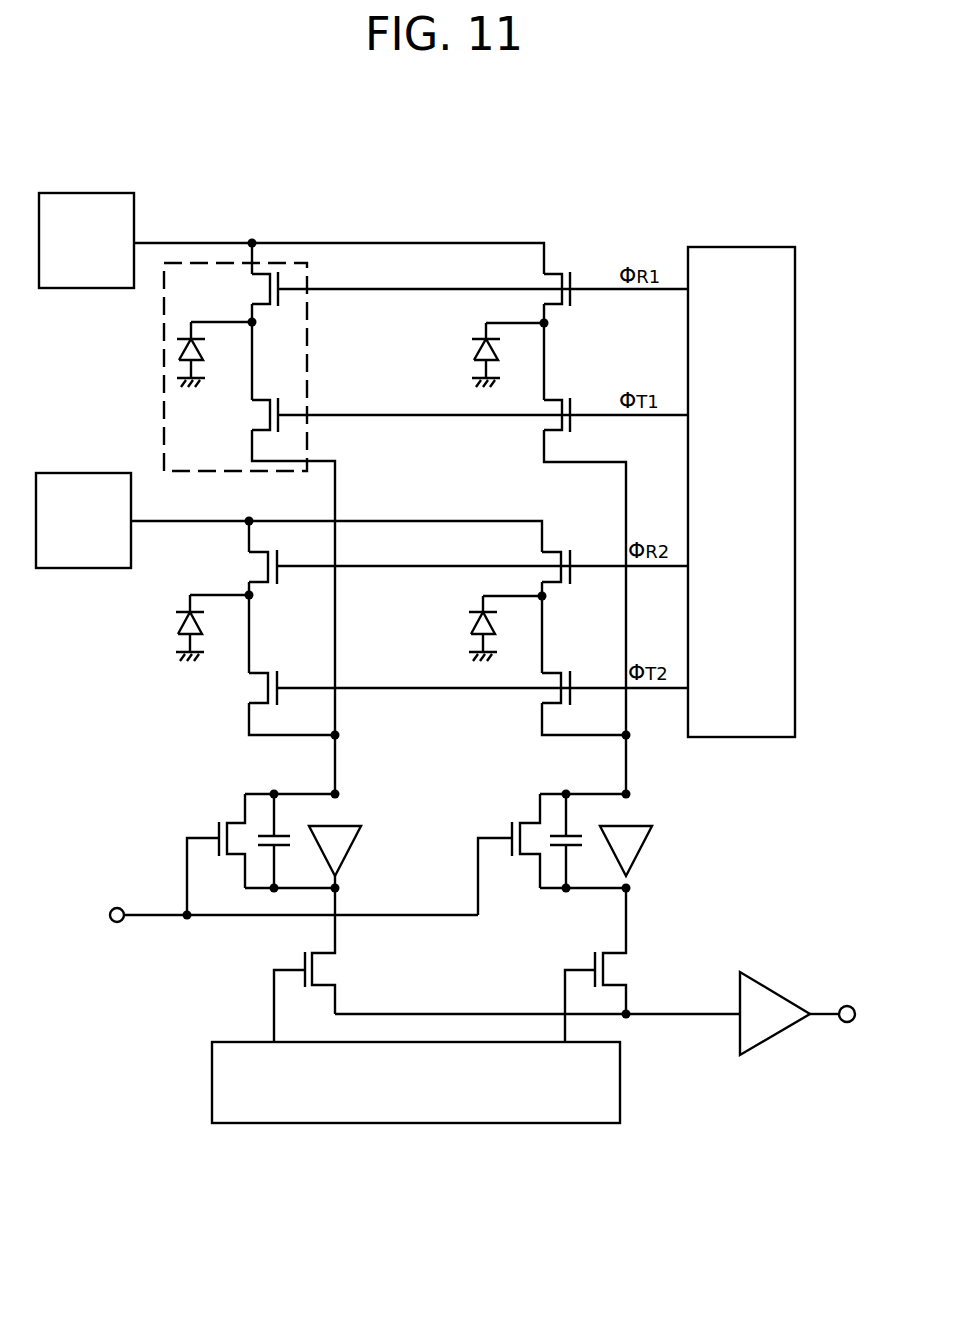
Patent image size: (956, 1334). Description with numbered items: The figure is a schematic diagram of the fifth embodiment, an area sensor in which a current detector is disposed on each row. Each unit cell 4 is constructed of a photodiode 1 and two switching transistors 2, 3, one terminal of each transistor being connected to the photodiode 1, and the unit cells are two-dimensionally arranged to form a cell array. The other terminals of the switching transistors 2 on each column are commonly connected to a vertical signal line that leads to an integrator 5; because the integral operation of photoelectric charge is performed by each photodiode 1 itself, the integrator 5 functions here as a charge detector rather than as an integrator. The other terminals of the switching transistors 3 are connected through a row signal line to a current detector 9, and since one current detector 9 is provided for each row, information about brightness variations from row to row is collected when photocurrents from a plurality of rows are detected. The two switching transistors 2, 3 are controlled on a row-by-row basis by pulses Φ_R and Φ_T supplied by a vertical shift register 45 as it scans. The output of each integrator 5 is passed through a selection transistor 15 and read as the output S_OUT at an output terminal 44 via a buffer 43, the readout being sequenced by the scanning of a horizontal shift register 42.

The photodiode 1 is at (208, 351).
The switching transistor 2 is at (257, 413).
The switching transistor 3 is at (256, 289).
The unit cell 4 is at (309, 349).
The integrator 5 is at (355, 850).
The current detector 9 is at (112, 193).
The horizontal selection transistor 15 is at (328, 970).
The horizontal shift register 42 is at (408, 1123).
The buffer 43 is at (768, 1040).
The output terminal 44 is at (845, 1024).
The vertical shift register 45 is at (755, 247).